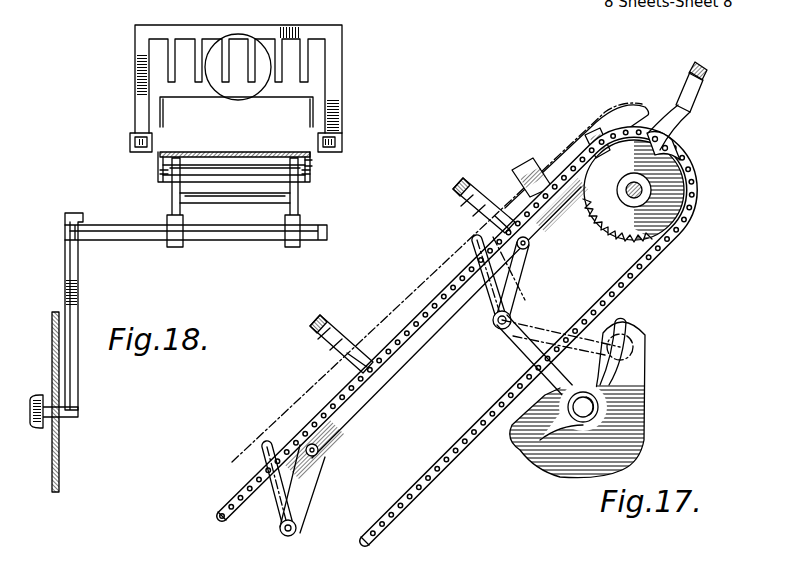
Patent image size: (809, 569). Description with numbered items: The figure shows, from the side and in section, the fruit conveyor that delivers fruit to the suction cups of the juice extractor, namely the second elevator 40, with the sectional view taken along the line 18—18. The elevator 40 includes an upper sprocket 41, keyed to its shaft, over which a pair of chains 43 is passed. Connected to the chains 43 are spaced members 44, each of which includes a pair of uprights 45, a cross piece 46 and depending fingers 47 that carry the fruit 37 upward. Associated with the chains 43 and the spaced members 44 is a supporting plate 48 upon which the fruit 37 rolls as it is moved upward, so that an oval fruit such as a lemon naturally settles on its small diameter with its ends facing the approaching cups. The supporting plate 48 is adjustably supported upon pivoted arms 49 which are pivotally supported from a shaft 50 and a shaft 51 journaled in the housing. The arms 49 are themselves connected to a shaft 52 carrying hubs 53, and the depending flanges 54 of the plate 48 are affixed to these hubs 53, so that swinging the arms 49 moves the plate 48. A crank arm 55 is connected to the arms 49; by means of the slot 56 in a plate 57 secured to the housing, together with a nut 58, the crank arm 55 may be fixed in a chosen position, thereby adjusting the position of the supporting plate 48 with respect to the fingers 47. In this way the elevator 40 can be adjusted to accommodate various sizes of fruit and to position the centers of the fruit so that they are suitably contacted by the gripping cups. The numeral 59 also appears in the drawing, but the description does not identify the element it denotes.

In FIG. 17, the section line 18— 18 is at (490, 143).
In FIG. 18, the fruit 37 is at (262, 95).
In FIG. 17, the second elevator 40 is at (700, 207).
In FIG. 17, the upper sprocket 41 is at (672, 168).
In FIG. 18, the chains 43 is at (140, 150).
In FIG. 17, the chains 43 is at (394, 512).
In FIG. 18, the spaced members 44 is at (344, 63).
In FIG. 17, the spaced members 44 is at (350, 335).
In FIG. 18, the uprights 45 is at (137, 105).
In FIG. 17, the uprights 45 is at (348, 357).
In FIG. 18, the cross piece 46 is at (307, 33).
In FIG. 17, the cross piece 46 is at (318, 320).
In FIG. 18, the depending fingers 47 is at (214, 97).
In FIG. 17, the depending fingers 47 is at (330, 336).
In FIG. 18, the supporting plate 48 is at (180, 99).
In FIG. 17, the supporting plate 48 is at (403, 330).
In FIG. 18, the pivoted arms 49 is at (172, 196).
In FIG. 17, the pivoted arms 49 is at (307, 485).
In FIG. 17, the shaft 50 is at (298, 528).
In FIG. 18, the shaft 51 is at (120, 238).
In FIG. 17, the shaft 51 is at (494, 328).
In FIG. 18, the shaft 52 is at (220, 170).
In FIG. 17, the shaft 52 is at (320, 452).
In FIG. 18, the hubs 53 is at (162, 174).
In FIG. 17, the depending flanges 54 is at (390, 370).
In FIG. 18, the crank arm 55 is at (80, 291).
In FIG. 17, the crank arm 55 is at (553, 320).
In FIG. 17, the slot 56 is at (608, 378).
In FIG. 18, the plate 57 is at (60, 455).
In FIG. 17, the plate 57 is at (630, 417).
In FIG. 18, the nut 58 is at (38, 430).
In FIG. 17, the nut 58 is at (623, 333).
In FIG. 18, the roller 59 is at (312, 172).